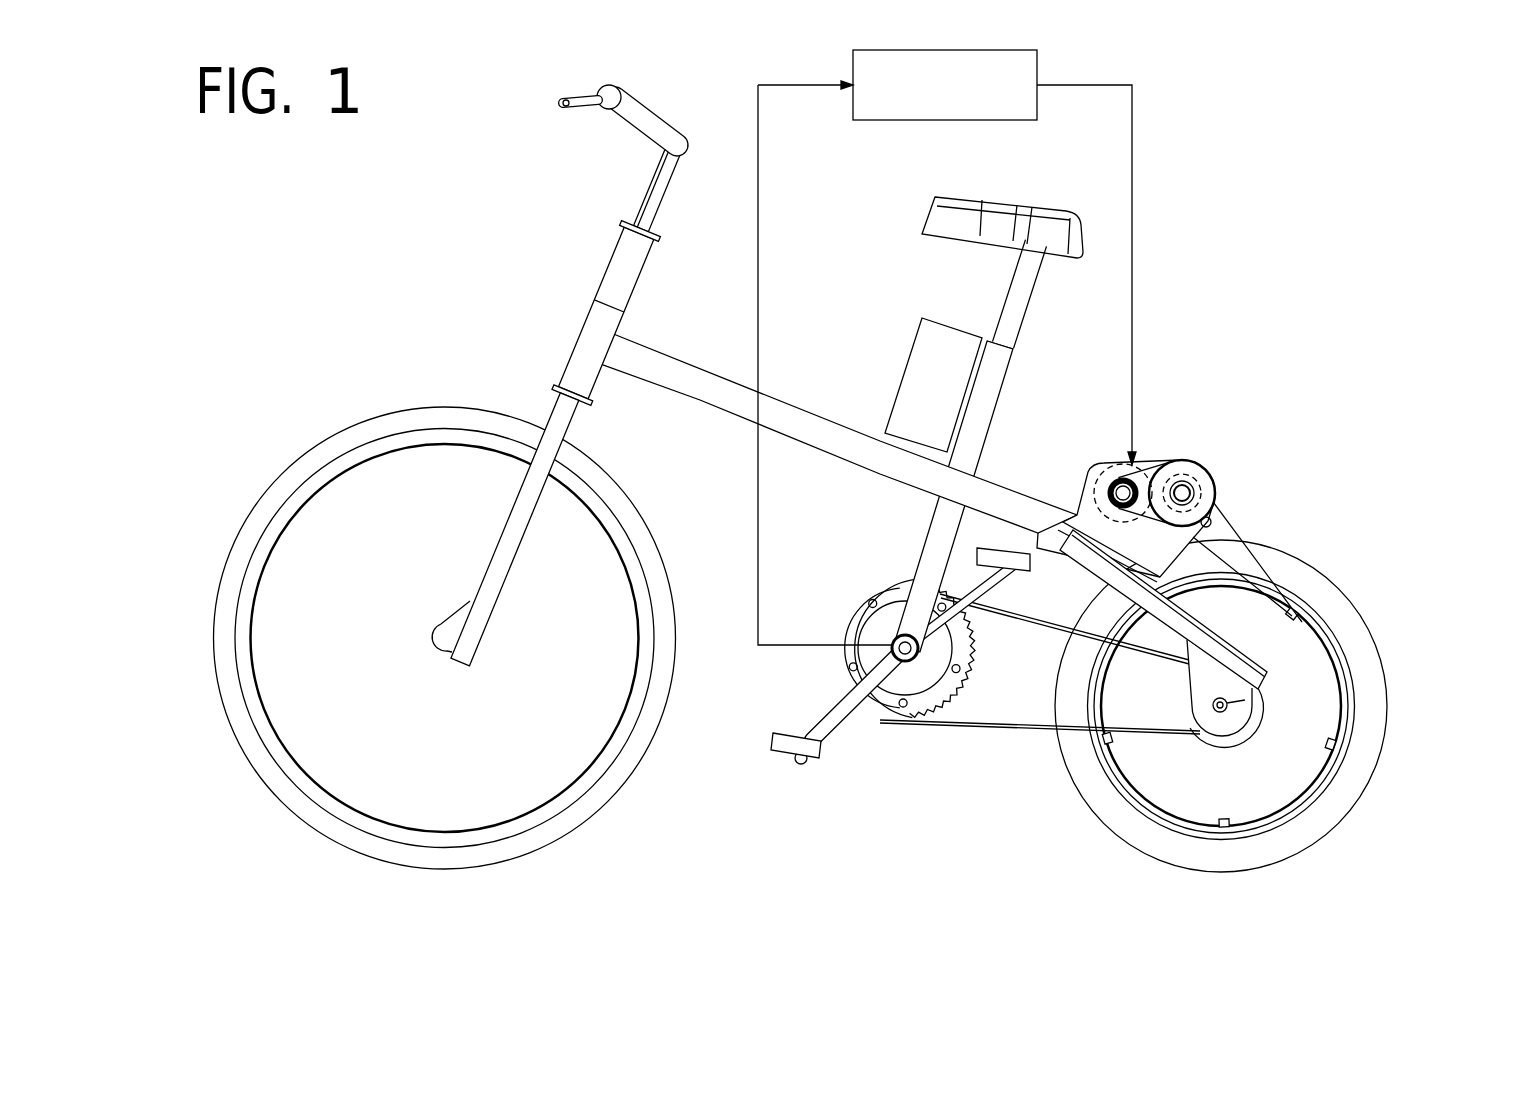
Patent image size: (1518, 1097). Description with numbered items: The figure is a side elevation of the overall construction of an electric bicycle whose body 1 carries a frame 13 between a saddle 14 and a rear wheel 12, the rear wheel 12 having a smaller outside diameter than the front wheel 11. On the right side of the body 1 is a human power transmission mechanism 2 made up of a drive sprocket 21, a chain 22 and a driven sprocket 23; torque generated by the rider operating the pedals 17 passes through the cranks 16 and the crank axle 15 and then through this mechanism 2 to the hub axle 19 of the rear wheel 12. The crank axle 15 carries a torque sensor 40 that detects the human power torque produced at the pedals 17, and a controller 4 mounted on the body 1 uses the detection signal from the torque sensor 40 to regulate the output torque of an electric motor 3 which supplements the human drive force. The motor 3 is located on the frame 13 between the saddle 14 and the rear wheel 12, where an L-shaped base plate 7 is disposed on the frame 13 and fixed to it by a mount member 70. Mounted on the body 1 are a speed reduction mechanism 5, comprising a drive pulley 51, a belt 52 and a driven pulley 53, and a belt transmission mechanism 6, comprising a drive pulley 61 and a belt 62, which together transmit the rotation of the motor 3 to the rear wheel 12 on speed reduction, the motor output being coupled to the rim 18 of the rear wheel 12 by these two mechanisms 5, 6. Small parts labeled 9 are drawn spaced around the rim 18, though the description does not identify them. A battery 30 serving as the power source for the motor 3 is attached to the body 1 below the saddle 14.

The bicycle body 1 is at (844, 507).
The human power transmission mechanism 2 is at (882, 669).
The electric motor 3 is at (1123, 458).
The controller 4 is at (955, 50).
The speed reduction mechanism 5 is at (1132, 426).
The belt transmission mechanism 6 is at (1213, 593).
The base plate 7 is at (1070, 513).
The detection elements on rim 9 is at (1296, 610).
The front wheel 11 is at (370, 418).
The rear wheel 12 is at (1264, 729).
The frame 13 is at (684, 387).
The saddle 14 is at (970, 194).
The crank axle 15 is at (917, 665).
The cranks 16 is at (843, 702).
The pedals 17 is at (783, 742).
The rim 18 is at (1313, 790).
The hub axle 19 is at (1228, 708).
The drive sprocket 21 is at (943, 710).
The chain 22 is at (1010, 727).
The driven sprocket 23 is at (1222, 742).
The battery 30 is at (905, 383).
The torque sensor 40 is at (920, 648).
The drive pulley 51 is at (1096, 480).
The belt 52 is at (1155, 458).
The driven pulley 53 is at (1213, 460).
The drive pulley 61 is at (1182, 455).
The belt 62 is at (1248, 523).
The mount member 70 is at (1040, 568).